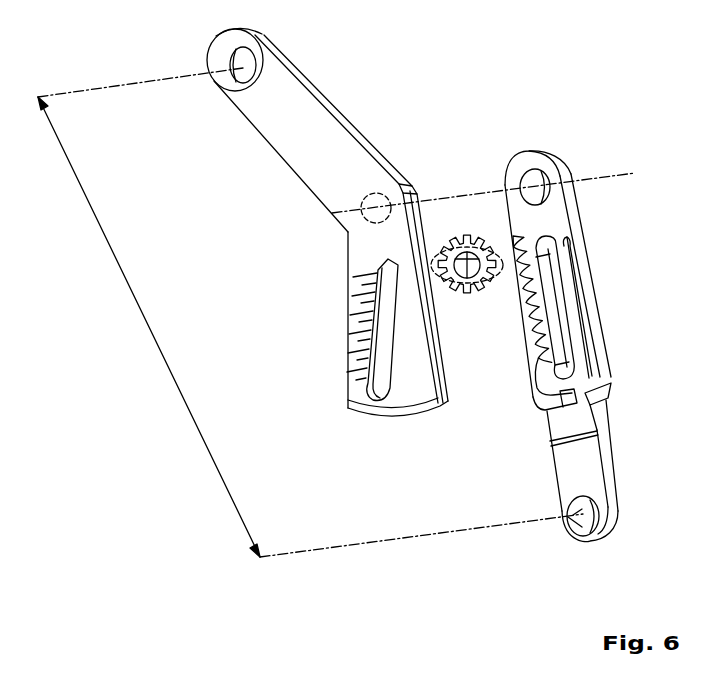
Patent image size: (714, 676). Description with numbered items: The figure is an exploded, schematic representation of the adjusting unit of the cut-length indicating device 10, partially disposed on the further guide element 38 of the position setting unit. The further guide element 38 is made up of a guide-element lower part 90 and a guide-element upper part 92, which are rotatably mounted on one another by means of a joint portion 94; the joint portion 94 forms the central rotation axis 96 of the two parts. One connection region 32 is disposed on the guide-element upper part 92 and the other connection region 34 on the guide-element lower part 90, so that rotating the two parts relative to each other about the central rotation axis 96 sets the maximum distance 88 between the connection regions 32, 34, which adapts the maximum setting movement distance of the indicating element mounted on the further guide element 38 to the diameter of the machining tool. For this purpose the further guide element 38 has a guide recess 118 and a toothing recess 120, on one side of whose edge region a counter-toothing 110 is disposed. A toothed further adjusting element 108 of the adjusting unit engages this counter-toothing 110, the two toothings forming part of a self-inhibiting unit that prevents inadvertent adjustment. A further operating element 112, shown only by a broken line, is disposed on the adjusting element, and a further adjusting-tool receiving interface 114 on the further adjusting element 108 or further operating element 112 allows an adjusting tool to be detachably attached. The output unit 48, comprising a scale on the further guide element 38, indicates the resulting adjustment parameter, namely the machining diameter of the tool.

The cut-length indicating device 10 is at (120, 57).
The connection region 32 is at (215, 78).
The connection region 34 is at (574, 520).
The further guide element 38 is at (160, 134).
The output unit 48 is at (302, 246).
The maximum distance 88 is at (147, 326).
The guide-element lower part 90 is at (564, 358).
The guide-element upper part 92 is at (302, 246).
The joint portion 94 is at (377, 192).
The central rotation axis 96 is at (632, 173).
The further adjusting element 108 is at (477, 251).
The counter-toothing 110 is at (536, 353).
The further operating element 112 is at (501, 282).
The further adjusting-tool receiving interface 114 is at (464, 288).
The guide recess 118 is at (392, 340).
The toothing recess 120 is at (550, 300).